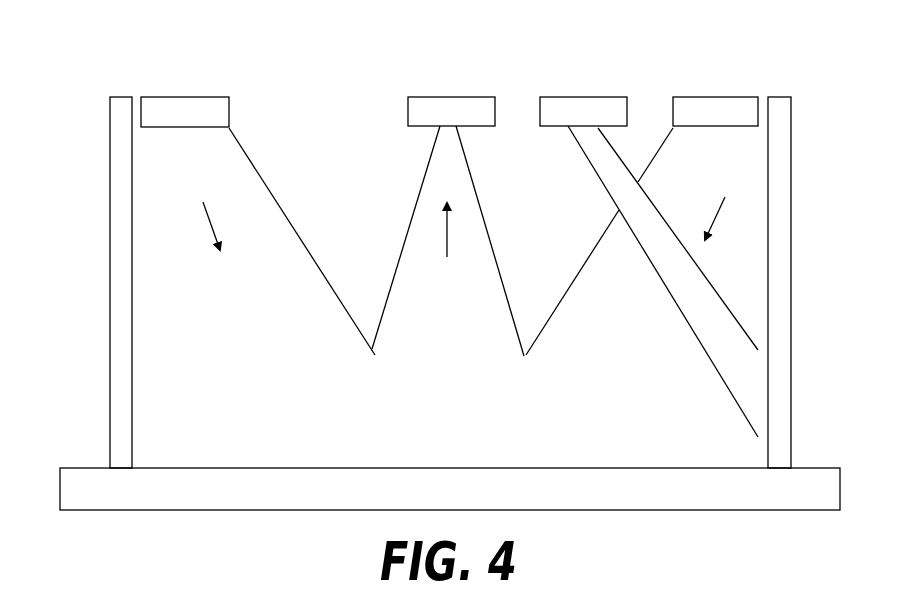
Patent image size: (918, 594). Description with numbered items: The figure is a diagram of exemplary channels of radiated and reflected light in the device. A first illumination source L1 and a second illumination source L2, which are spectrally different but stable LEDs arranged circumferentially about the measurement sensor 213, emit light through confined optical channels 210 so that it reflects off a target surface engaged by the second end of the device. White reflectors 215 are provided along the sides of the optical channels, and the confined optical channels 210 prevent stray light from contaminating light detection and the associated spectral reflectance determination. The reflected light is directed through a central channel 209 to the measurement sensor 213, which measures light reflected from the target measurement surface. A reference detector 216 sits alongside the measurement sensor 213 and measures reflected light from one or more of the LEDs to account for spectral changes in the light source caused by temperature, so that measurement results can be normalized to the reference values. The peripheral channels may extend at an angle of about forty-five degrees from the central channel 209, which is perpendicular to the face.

The first illumination source L1 is at (188, 97).
The second illumination source L2 is at (720, 97).
The measurement sensor 213 is at (458, 97).
The reference detector 216 is at (580, 97).
The central channel 209 is at (458, 330).
The confined optical channels 210 is at (227, 330).
The white reflectors 215 is at (110, 304).